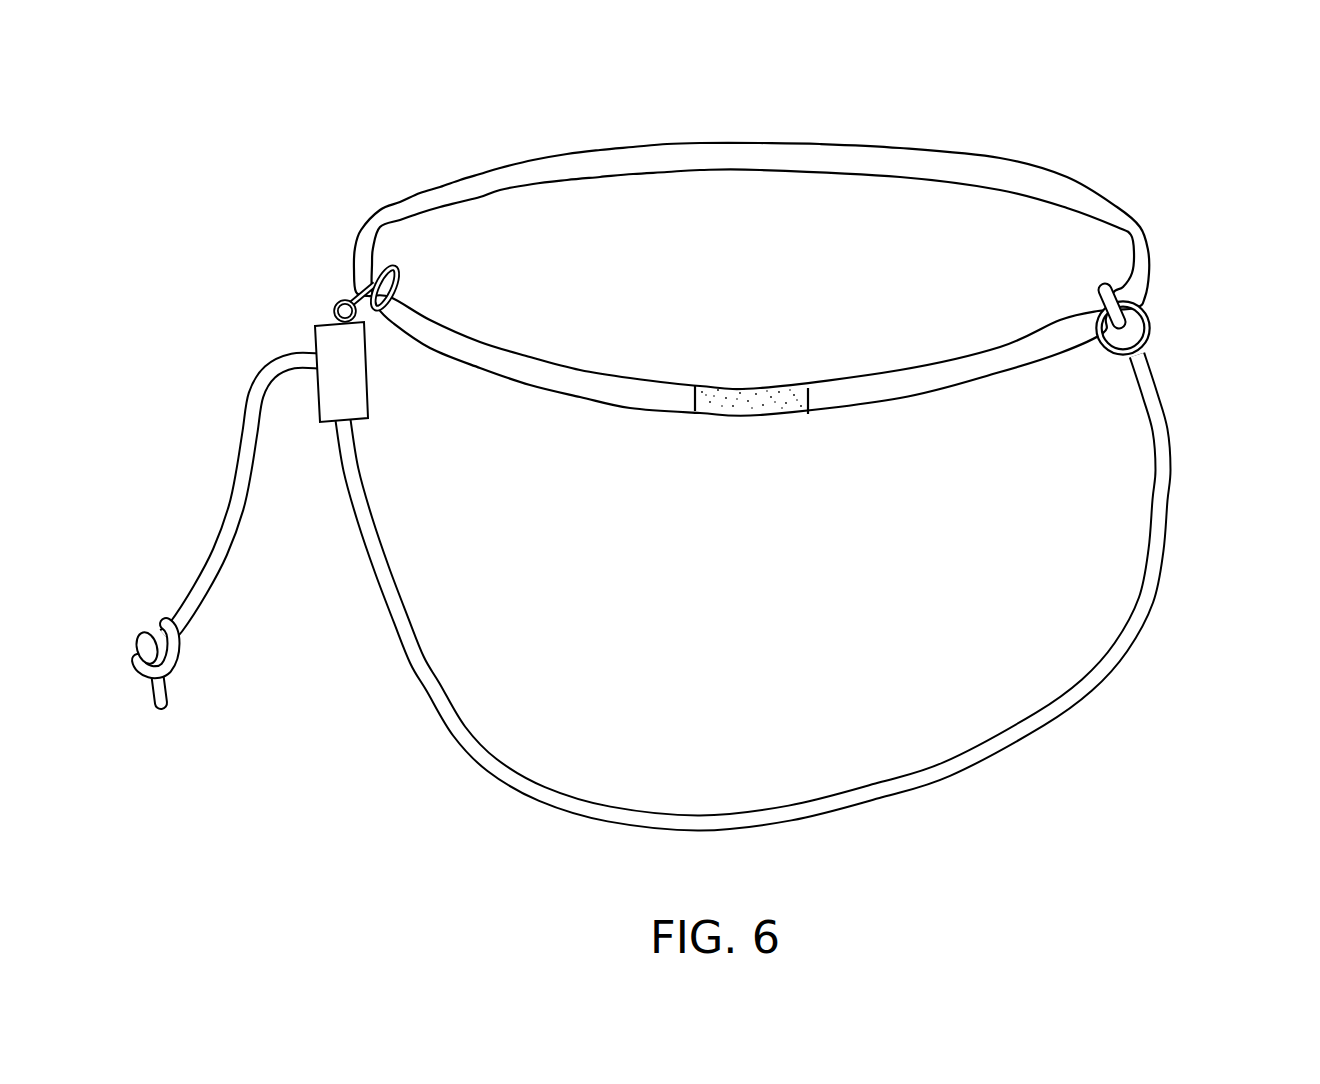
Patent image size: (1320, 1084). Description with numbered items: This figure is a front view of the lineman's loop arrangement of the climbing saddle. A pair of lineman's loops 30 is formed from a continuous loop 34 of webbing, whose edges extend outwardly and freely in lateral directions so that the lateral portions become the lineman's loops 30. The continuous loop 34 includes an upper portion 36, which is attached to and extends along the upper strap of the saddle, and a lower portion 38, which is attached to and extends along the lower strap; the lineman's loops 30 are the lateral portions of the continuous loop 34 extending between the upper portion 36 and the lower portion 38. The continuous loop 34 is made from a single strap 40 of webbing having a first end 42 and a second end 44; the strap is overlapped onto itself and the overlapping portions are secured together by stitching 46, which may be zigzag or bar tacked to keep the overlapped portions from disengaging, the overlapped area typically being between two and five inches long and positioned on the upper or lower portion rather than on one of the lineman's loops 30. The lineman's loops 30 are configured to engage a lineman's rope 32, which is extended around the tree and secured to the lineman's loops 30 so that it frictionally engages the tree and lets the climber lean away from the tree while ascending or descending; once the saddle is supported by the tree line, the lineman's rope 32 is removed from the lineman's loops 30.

The lineman's loop 30 is at (357, 250).
The lineman's rope 32 is at (1160, 512).
The continuous loop 34 is at (751, 299).
The upper portion 36 is at (747, 153).
The lower portion 38 is at (905, 398).
The single strap 40 is at (751, 282).
The first end 42 is at (693, 398).
The second end 44 is at (813, 395).
The stitching 46 is at (746, 472).